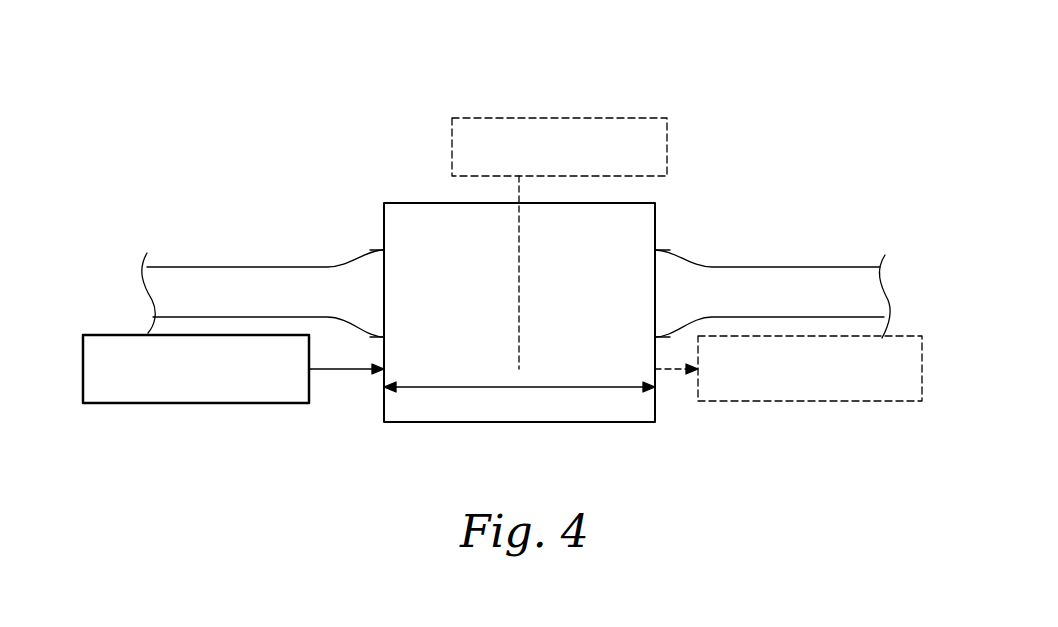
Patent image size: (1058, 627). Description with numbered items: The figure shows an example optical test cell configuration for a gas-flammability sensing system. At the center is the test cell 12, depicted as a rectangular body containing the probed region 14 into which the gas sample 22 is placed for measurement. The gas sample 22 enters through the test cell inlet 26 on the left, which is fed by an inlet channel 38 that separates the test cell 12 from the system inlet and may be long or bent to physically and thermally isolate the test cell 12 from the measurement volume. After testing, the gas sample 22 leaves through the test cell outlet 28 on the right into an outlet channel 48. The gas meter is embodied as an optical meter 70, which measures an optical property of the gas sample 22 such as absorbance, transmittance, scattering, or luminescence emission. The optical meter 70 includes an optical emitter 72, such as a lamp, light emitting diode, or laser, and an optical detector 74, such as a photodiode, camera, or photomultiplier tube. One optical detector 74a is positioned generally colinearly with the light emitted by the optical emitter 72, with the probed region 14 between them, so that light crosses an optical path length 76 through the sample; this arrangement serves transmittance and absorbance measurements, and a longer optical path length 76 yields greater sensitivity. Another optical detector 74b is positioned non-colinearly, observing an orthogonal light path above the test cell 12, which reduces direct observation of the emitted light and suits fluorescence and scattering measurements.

The test cell 12 is at (290, 125).
The probed region 14 is at (430, 410).
The gas sample 22 is at (598, 262).
The test cell inlet 26 is at (385, 278).
The test cell outlet 28 is at (655, 290).
The inlet channel 38 is at (247, 268).
The outlet channel 48 is at (813, 267).
The optical meter 70 is at (392, 117).
The optical emitter 72 is at (233, 369).
The optical detector 74 is at (443, 146).
The optical detector 74a is at (788, 368).
The optical detector 74b is at (559, 147).
The optical path length 76 is at (519, 399).